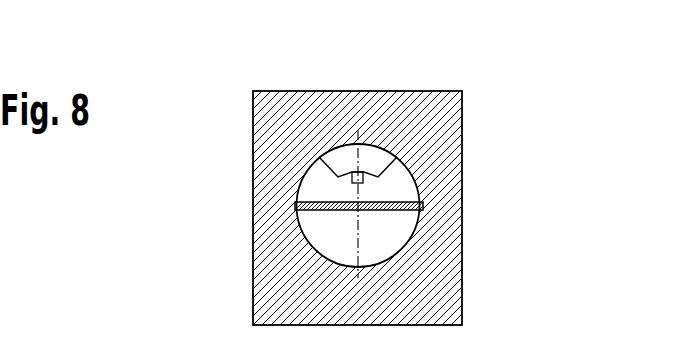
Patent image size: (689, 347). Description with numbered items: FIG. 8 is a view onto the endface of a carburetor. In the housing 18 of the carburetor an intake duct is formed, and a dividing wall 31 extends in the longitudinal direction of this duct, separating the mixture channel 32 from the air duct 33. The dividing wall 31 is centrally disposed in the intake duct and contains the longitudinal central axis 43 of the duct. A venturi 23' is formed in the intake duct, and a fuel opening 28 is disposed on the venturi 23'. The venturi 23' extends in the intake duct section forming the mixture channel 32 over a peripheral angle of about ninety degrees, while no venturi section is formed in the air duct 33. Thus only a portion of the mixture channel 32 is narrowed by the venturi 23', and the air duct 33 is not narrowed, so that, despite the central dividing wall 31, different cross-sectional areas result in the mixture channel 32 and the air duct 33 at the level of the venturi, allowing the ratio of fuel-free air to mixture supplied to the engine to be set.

The housing 18 is at (295, 110).
The venturi 23' is at (384, 162).
The fuel opening 28 is at (362, 167).
The dividing wall 31 is at (305, 203).
The mixture channel 32 is at (398, 182).
The air duct 33 is at (315, 232).
The longitudinal central axis 43 is at (363, 207).